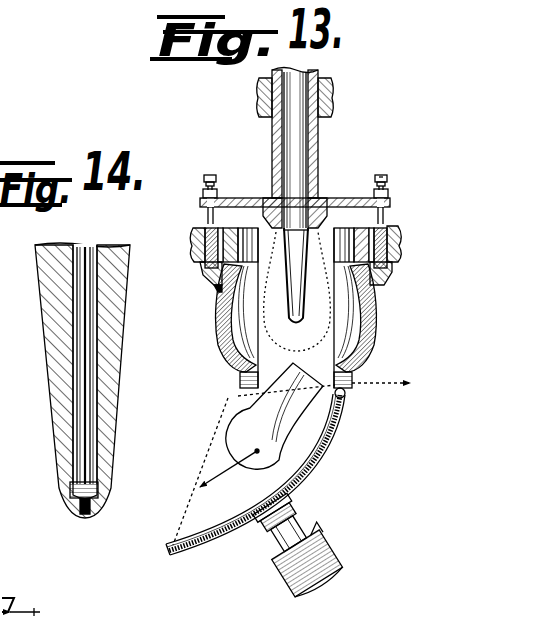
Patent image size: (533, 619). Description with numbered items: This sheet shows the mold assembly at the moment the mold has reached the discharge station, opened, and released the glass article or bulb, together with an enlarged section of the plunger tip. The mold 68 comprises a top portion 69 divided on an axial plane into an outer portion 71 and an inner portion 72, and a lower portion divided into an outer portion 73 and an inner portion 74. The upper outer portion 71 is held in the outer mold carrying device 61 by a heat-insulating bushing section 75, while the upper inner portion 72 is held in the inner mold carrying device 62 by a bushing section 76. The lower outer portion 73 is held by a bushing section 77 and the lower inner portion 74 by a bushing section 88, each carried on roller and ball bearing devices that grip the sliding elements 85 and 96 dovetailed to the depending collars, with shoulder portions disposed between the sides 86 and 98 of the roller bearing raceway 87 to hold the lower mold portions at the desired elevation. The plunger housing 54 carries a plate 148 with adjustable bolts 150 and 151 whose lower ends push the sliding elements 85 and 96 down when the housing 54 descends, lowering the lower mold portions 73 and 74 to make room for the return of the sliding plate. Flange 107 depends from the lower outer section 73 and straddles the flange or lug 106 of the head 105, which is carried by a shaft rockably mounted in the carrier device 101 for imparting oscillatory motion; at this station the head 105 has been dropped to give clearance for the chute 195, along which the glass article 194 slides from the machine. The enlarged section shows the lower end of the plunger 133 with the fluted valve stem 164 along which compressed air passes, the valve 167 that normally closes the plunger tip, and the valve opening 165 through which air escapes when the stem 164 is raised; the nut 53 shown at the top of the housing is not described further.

In FIG. 13, the hexagonal nut 53 is at (334, 100).
In FIG. 13, the plunger housing 54 is at (319, 150).
In FIG. 13, the plunger 133 is at (290, 137).
In FIG. 14, the plunger 133 is at (110, 405).
In FIG. 13, the plate 148 is at (392, 200).
In FIG. 13, the bolt 150 is at (210, 176).
In FIG. 13, the bolt 151 is at (389, 181).
In FIG. 13, the bushing section 75 is at (221, 226).
In FIG. 13, the bushing section 76 is at (381, 176).
In FIG. 13, the outer portion 71 is at (240, 226).
In FIG. 13, the top portion 69 is at (232, 228).
In FIG. 13, the inner portion 72 is at (352, 226).
In FIG. 13, the outer mold carrying device 61 is at (191, 236).
In FIG. 13, the sliding element 96 is at (400, 238).
In FIG. 13, the inner mold carrying device 62 is at (393, 246).
In FIG. 13, the sliding element 85 is at (208, 256).
In FIG. 13, the sides of roller bearing raceway 98 is at (380, 272).
In FIG. 13, the sides of roller bearing raceway 86 is at (210, 280).
In FIG. 13, the roller bearing raceway 87 is at (220, 290).
In FIG. 13, the bushing section 88 is at (362, 290).
In FIG. 13, the bushing section 77 is at (238, 300).
In FIG. 13, the outer portion 73 is at (216, 308).
In FIG. 13, the inner portion 74 is at (366, 352).
In FIG. 13, the mold 68 is at (224, 366).
In FIG. 13, the flange 107 is at (248, 386).
In FIG. 13, the glass article 194 is at (220, 450).
In FIG. 13, the chute 195 is at (195, 538).
In FIG. 13, the flange or lug 106 is at (290, 497).
In FIG. 13, the head 105 is at (298, 526).
In FIG. 13, the carrier device 101 is at (336, 550).
In FIG. 14, the valve stem 164 is at (80, 462).
In FIG. 14, the valve 167 is at (74, 508).
In FIG. 14, the valve opening 165 is at (86, 518).